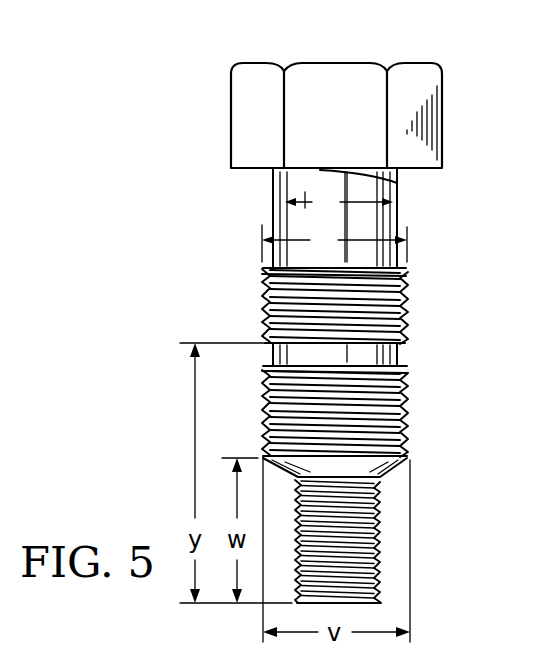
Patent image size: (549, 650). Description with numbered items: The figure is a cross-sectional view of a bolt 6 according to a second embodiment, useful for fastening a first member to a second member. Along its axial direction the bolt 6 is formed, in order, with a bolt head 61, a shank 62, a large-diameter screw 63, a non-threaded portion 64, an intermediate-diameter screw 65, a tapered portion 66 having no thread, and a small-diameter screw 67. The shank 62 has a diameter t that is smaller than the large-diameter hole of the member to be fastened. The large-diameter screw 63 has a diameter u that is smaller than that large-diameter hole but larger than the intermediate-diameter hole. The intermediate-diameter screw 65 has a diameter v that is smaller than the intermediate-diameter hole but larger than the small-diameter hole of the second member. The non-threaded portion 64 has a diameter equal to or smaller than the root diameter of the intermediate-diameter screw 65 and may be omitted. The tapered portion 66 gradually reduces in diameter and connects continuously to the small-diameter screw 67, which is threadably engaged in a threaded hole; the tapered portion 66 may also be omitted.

The bolt 6 is at (276, 46).
The bolt head 61 is at (387, 64).
The shank 62 is at (400, 219).
The large-diameter screw 63 is at (408, 292).
The non-threaded portion 64 is at (400, 352).
The intermediate-diameter screw 65 is at (408, 418).
The tapered portion 66 is at (385, 473).
The small-diameter screw 67 is at (383, 532).